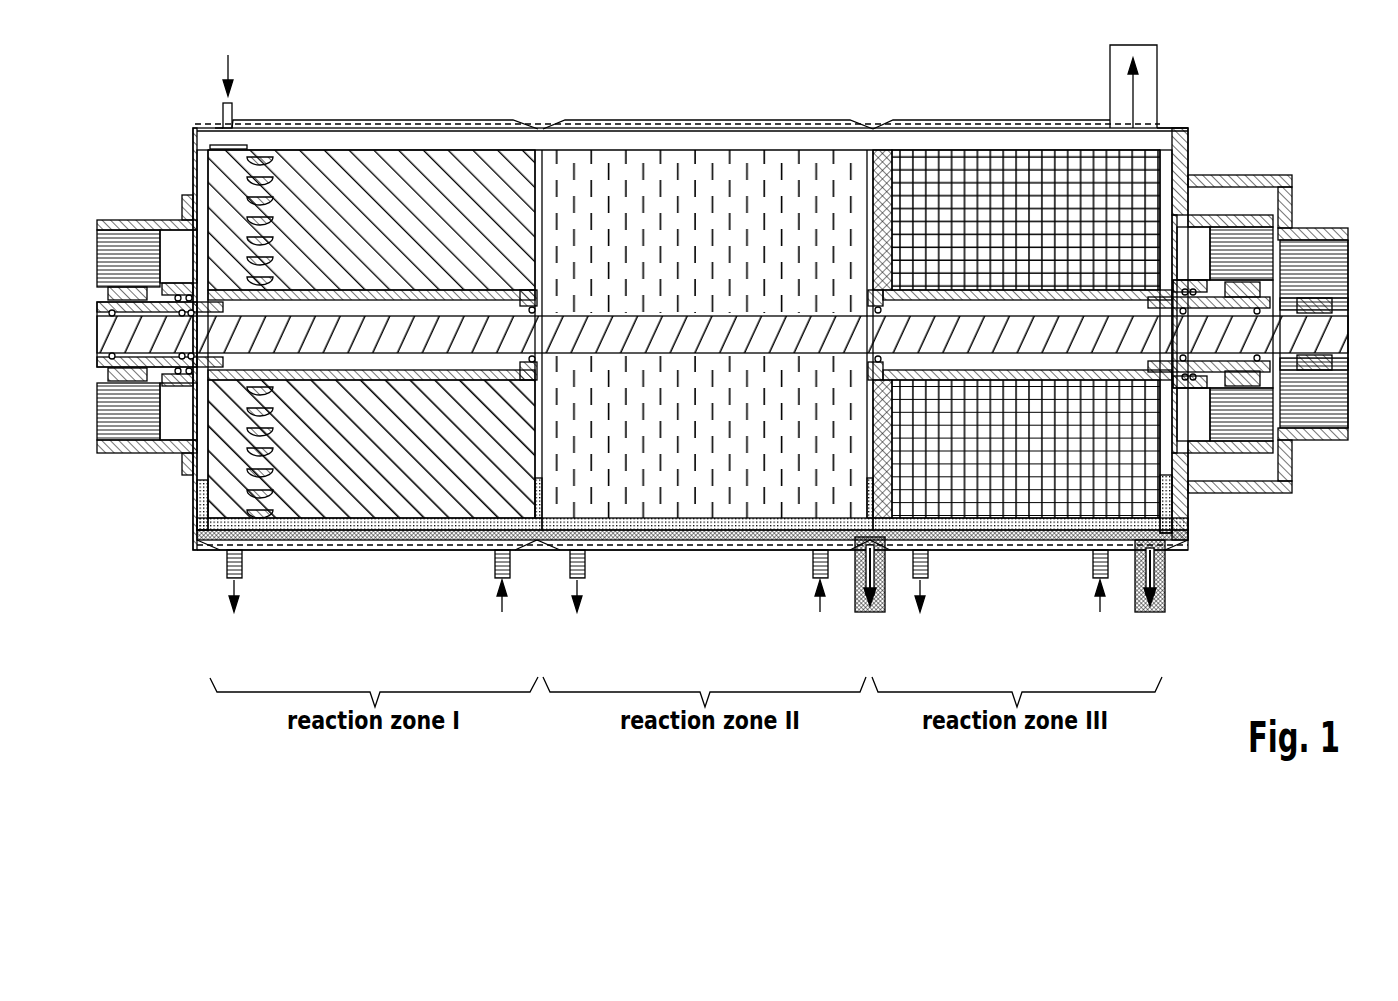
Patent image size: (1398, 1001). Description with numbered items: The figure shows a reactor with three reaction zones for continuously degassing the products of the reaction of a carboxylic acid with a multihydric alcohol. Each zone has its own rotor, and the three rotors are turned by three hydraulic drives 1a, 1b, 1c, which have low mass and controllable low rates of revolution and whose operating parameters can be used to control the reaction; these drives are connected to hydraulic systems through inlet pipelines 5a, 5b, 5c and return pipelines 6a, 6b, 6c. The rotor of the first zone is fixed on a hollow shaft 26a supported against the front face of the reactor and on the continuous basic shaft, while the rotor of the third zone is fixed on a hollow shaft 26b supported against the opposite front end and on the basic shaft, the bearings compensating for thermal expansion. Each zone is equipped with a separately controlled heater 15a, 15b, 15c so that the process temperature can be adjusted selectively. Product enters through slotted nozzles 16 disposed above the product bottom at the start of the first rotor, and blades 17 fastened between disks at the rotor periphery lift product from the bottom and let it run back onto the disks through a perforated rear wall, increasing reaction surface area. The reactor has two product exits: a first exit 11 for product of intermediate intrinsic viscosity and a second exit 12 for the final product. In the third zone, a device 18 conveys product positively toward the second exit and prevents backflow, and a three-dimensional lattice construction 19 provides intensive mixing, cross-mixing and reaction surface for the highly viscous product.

The hydraulic drive 1a is at (150, 433).
The hydraulic drive 1b is at (1338, 412).
The hydraulic drive 1c is at (1255, 432).
The inlet pipeline 5a is at (127, 250).
The inlet pipeline 5b is at (1313, 240).
The inlet pipeline 5c is at (1240, 228).
The return pipeline 6a is at (127, 405).
The return pipeline 6b is at (1315, 458).
The return pipeline 6c is at (1242, 478).
The first exit 11 is at (875, 612).
The second exit 12 is at (1155, 612).
The heater 15a is at (333, 524).
The heater 15b is at (699, 530).
The heater 15c is at (1004, 537).
The slotted nozzle 16 is at (217, 145).
The blades 17 is at (266, 152).
The device for positive conveying 18 is at (880, 150).
The three-dimensional lattice construction 19 is at (931, 152).
The hollow shaft 26a is at (366, 294).
The hollow shaft 26b is at (1000, 294).